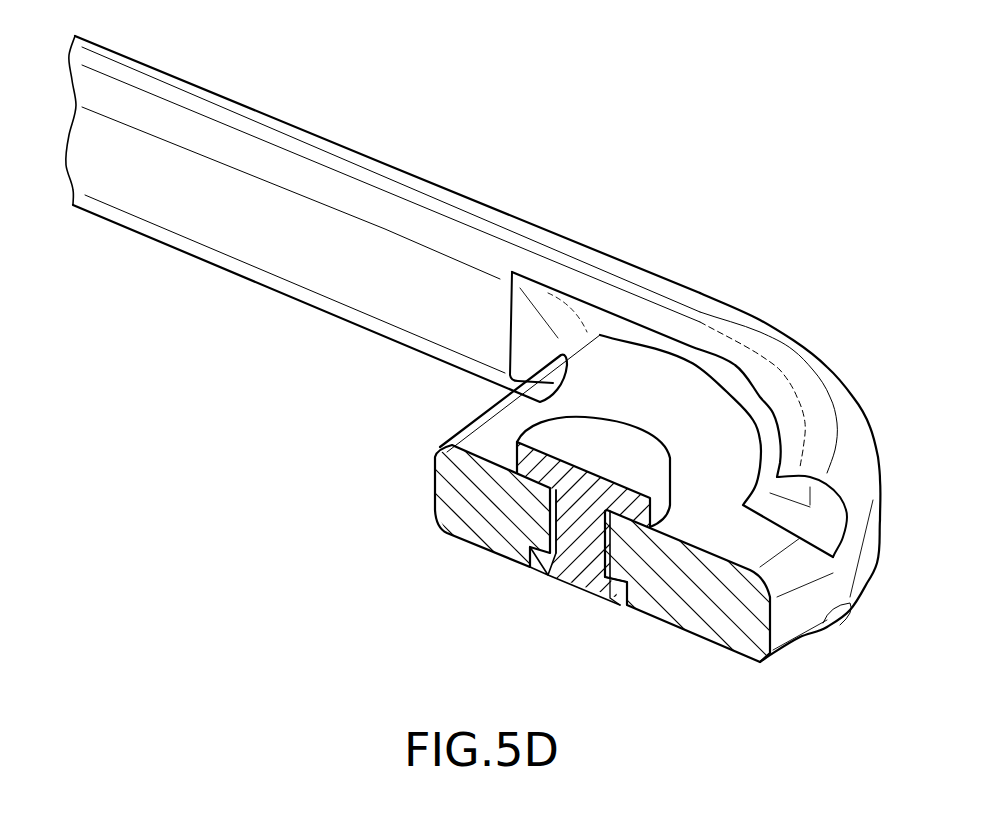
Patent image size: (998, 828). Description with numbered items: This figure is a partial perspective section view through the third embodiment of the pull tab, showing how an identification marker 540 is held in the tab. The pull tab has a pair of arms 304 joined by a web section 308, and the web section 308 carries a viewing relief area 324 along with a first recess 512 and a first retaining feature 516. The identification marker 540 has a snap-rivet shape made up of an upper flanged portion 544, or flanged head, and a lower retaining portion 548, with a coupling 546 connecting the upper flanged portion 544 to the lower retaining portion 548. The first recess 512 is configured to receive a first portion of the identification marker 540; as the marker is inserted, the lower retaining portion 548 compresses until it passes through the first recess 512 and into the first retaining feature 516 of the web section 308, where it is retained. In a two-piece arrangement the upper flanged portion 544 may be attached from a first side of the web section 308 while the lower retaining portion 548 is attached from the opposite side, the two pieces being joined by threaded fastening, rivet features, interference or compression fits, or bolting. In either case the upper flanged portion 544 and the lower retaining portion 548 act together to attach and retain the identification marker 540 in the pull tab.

The arm 304 is at (267, 150).
The viewing relief area 324 is at (797, 551).
The web section 308 is at (435, 480).
The upper flanged portion 544 is at (594, 455).
The identification marker 540 is at (648, 430).
The first recess 512 is at (547, 518).
The lower retaining portion 548 is at (562, 606).
The coupling 546 is at (622, 562).
The first retaining feature 516 is at (618, 585).